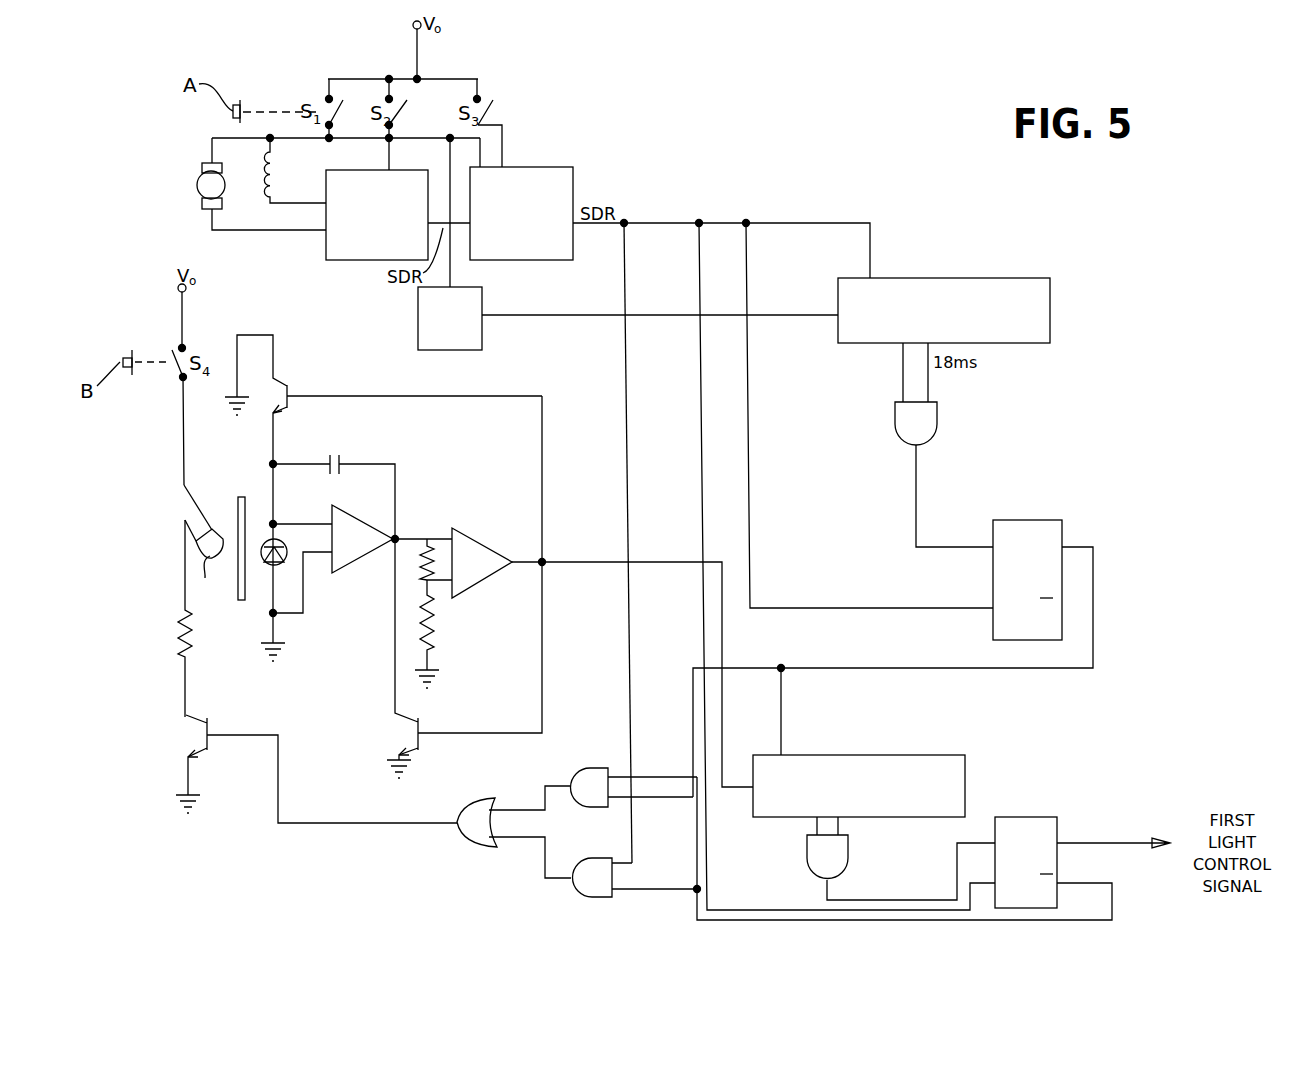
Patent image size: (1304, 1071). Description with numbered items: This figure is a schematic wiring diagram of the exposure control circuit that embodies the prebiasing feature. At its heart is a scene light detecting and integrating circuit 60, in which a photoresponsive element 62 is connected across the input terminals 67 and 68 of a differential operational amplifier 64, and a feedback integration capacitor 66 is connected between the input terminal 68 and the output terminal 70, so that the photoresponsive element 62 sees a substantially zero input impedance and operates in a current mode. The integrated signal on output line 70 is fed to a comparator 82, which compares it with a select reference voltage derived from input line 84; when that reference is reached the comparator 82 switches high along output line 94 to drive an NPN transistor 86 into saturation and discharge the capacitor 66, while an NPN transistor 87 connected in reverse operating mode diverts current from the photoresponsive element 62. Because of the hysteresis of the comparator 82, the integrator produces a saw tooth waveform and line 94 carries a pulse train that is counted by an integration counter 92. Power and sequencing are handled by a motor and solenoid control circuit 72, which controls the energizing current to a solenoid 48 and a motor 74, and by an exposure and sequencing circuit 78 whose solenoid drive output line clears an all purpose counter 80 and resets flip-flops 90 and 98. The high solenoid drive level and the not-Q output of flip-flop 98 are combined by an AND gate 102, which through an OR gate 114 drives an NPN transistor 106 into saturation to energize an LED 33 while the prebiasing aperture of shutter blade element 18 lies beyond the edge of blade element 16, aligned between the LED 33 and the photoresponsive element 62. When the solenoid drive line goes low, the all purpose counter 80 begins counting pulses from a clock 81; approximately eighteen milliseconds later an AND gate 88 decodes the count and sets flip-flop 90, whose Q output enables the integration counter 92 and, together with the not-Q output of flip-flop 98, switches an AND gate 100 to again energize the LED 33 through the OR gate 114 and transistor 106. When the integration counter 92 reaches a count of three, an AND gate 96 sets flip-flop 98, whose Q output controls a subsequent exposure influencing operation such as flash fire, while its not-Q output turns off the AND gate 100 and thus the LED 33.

The shutter blade element 16 is at (236, 510).
The shutter blade element 18 is at (246, 520).
The LED 33 is at (209, 576).
The solenoid 48 is at (265, 178).
The scene light detecting and integrating circuit 60 is at (416, 475).
The photoresponsive element 62 is at (266, 572).
The operational amplifier 64 is at (382, 552).
The feedback integration capacitor 66 is at (334, 455).
The input terminal 67 is at (311, 556).
The input terminal 68 is at (304, 524).
The output terminal 70 is at (428, 540).
The motor and solenoid control circuit 72 is at (360, 261).
The motor 74 is at (197, 188).
The exposure and sequencing circuit 78 is at (556, 168).
The all purpose counter 80 is at (1020, 279).
The clock 81 is at (483, 288).
The comparator 82 is at (478, 548).
The input line 84 is at (437, 590).
The NPN transistor 86 is at (412, 752).
The NPN transistor 87 is at (288, 386).
The AND gate 88 is at (937, 412).
The flip-flop 90 is at (1062, 525).
The integration counter 92 is at (930, 755).
The output line 94 is at (570, 562).
The AND gate 96 is at (848, 858).
The flip-flop 98 is at (1040, 817).
The AND gate 100 is at (590, 768).
The AND gate 102 is at (592, 858).
The NPN transistor 106 is at (198, 758).
The OR gate 114 is at (468, 840).